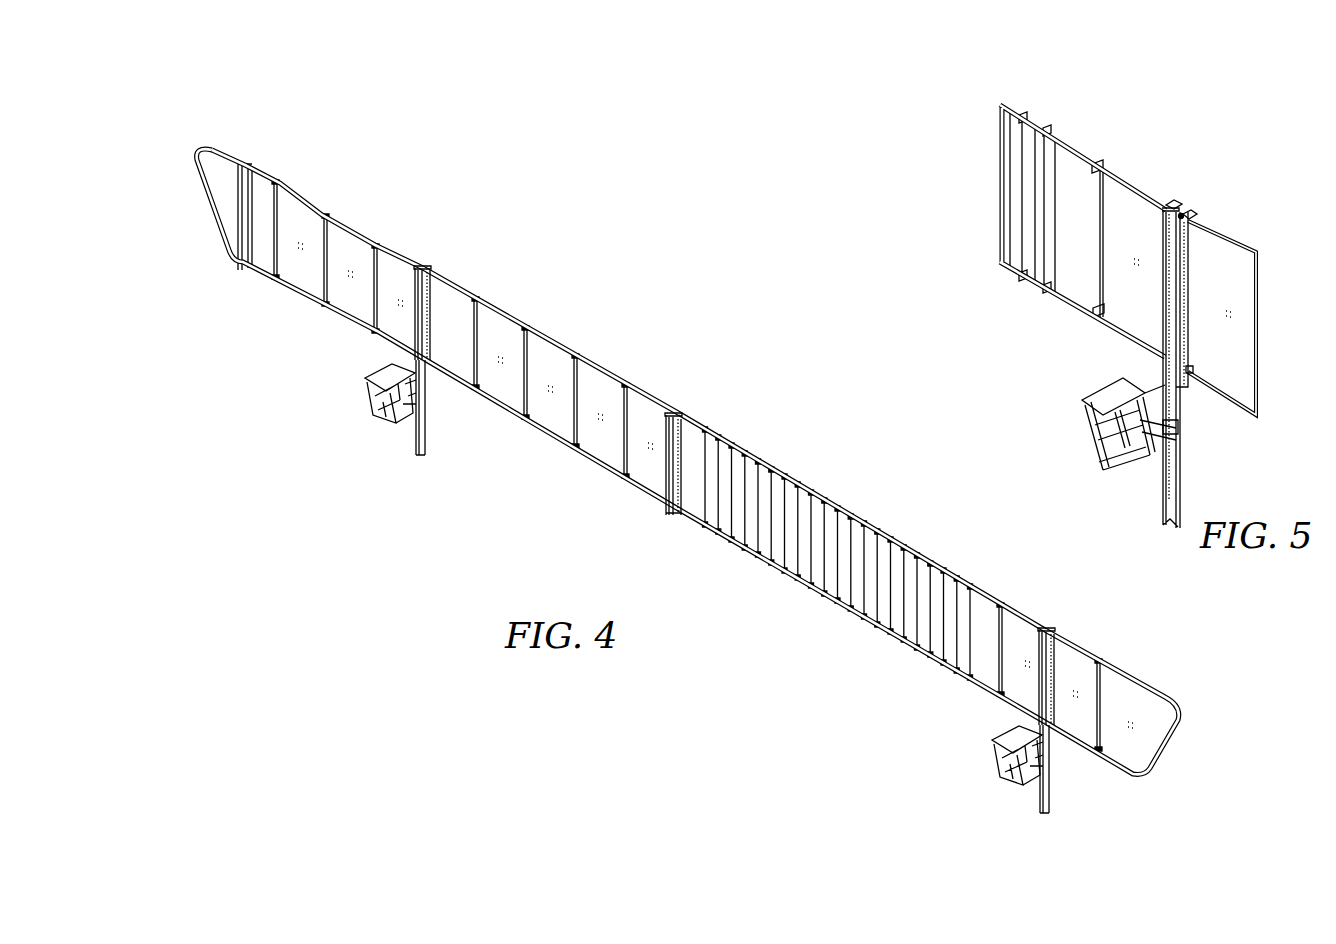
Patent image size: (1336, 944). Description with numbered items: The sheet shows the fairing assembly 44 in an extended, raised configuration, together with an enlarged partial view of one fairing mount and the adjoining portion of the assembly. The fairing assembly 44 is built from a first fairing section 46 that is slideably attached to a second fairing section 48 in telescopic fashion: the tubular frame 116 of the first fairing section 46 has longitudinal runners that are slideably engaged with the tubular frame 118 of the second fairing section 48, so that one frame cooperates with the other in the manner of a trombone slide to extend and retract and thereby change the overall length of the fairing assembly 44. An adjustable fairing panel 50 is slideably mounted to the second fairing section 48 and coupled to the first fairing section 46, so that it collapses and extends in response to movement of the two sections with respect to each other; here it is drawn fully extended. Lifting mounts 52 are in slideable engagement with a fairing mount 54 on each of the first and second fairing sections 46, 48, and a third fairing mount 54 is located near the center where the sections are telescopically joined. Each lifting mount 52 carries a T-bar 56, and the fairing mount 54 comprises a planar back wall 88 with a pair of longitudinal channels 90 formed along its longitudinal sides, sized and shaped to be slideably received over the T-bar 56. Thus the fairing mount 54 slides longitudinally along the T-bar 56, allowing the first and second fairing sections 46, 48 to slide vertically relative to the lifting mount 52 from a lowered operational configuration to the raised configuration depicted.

In FIG. 4, the fairing assembly 44 is at (722, 396).
In FIG. 4, the first fairing section 46 is at (488, 298).
In FIG. 4, the second fairing section 48 is at (928, 543).
In FIG. 5, the second fairing section 48 is at (1119, 165).
In FIG. 4, the adjustable fairing panel 50 is at (788, 540).
In FIG. 4, the lifting mount 52 is at (373, 373).
In FIG. 5, the lifting mount 52 is at (1101, 383).
In FIG. 4, the fairing mount 54 is at (425, 262).
In FIG. 5, the fairing mount 54 is at (1177, 272).
In FIG. 4, the T-bar 56 is at (431, 441).
In FIG. 5, the planar back wall 88 is at (1186, 214).
In FIG. 5, the longitudinal channel 90 is at (1177, 211).
In FIG. 4, the tubular frame 116 is at (538, 332).
In FIG. 4, the tubular frame 118 is at (1010, 604).